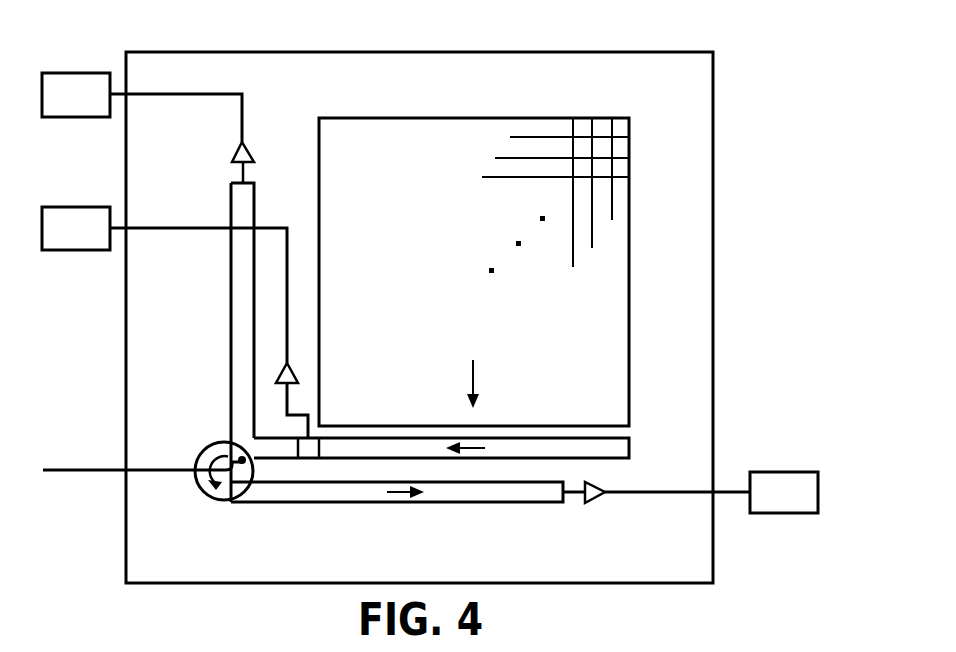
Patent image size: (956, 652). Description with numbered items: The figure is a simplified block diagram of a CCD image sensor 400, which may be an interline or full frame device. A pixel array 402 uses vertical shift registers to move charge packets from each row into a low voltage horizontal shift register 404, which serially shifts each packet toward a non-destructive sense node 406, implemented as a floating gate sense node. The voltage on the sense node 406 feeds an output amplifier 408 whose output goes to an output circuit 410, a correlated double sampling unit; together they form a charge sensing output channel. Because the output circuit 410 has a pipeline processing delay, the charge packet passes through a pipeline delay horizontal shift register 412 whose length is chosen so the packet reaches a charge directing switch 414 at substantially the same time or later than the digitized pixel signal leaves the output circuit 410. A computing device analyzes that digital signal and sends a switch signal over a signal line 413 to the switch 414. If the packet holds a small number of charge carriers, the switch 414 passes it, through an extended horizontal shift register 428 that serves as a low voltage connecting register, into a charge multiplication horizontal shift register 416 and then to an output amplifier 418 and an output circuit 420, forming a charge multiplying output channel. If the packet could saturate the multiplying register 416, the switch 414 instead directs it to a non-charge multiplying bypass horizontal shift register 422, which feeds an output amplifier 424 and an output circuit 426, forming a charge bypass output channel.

The image sensor 400 is at (713, 183).
The pixel array 402 is at (522, 117).
The horizontal shift register 404 is at (630, 452).
The non-destructive sense node 406 is at (312, 447).
The output amplifier 408 is at (278, 372).
The output circuit 410 is at (97, 206).
The pipeline delay horizontal shift register 412 is at (268, 462).
The signal line 413 is at (83, 470).
The charge directing switch 414 is at (232, 452).
The charge multiplication horizontal shift register 416 is at (330, 503).
The output amplifier 418 is at (598, 503).
The output circuit 420 is at (806, 471).
The non-charge multiplying bypass horizontal shift register 422 is at (230, 393).
The output amplifier 424 is at (236, 150).
The output circuit 426 is at (97, 72).
The extended horizontal shift register 428 is at (200, 484).